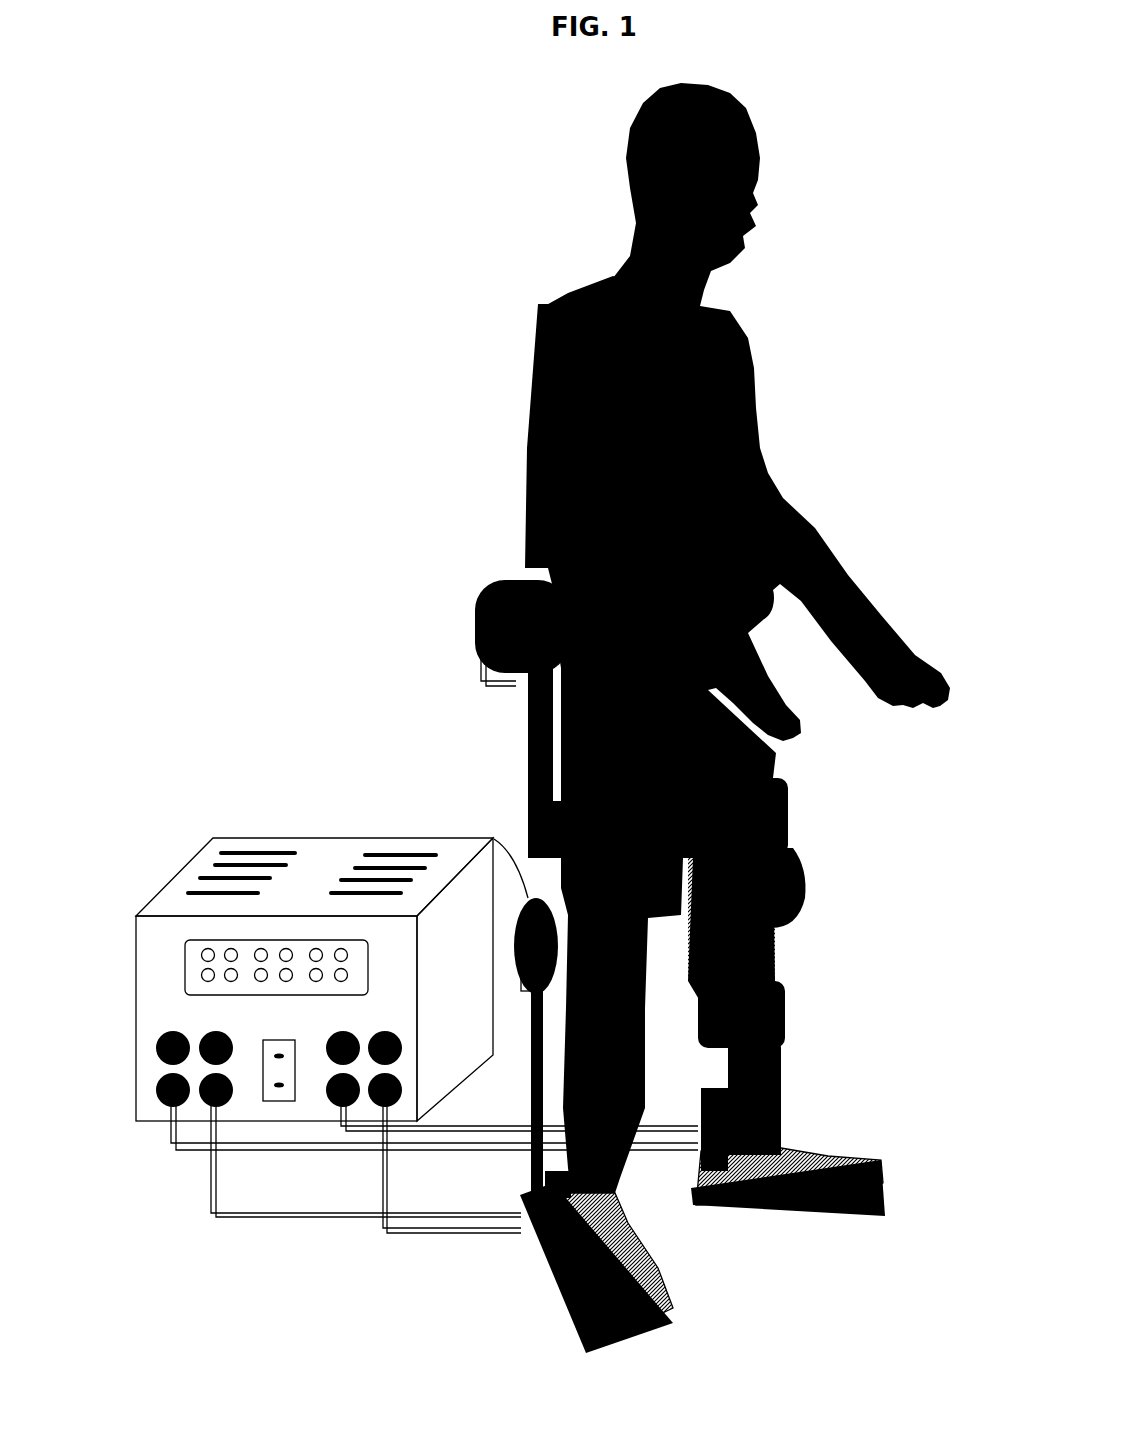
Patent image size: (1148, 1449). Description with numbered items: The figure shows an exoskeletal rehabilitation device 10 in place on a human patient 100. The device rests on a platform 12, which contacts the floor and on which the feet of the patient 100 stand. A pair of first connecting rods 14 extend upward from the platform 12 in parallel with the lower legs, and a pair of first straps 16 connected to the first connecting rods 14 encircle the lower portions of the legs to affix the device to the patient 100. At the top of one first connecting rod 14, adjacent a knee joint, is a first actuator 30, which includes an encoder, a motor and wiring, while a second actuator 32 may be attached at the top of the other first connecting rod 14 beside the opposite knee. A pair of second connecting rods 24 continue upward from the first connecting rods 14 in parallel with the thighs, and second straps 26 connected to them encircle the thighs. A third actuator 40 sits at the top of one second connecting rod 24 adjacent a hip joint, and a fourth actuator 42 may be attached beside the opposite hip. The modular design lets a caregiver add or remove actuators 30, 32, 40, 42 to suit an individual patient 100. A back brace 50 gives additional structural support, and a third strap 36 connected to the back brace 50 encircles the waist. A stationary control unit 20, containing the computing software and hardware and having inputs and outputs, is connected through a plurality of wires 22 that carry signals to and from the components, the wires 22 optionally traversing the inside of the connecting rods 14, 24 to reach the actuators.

The exoskeletal device 10 is at (312, 637).
The platform 12 is at (545, 1297).
The first connecting rods 14 is at (520, 1162).
The first straps 16 is at (777, 995).
The control unit 20 is at (218, 823).
The wires 22 is at (465, 657).
The second connecting rods 24 is at (520, 730).
The second straps 26 is at (775, 802).
The first actuator 30 is at (486, 831).
The second actuator 32 is at (793, 883).
The third strap 36 is at (733, 548).
The third actuator 40 is at (497, 570).
The fourth actuator 42 is at (753, 600).
The back brace 50 is at (523, 462).
The patient 100 is at (690, 360).